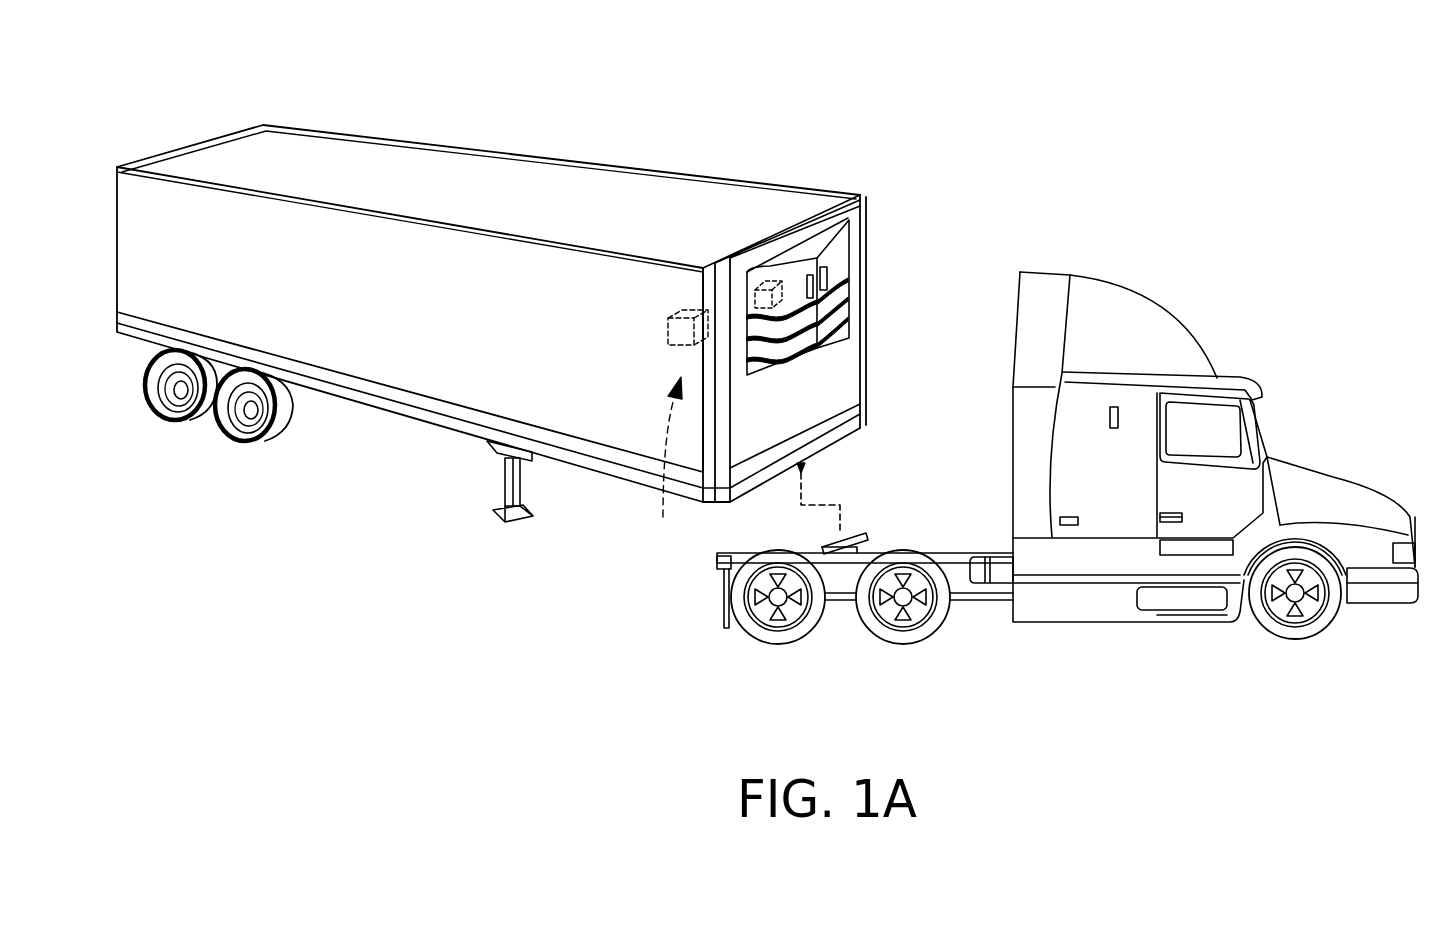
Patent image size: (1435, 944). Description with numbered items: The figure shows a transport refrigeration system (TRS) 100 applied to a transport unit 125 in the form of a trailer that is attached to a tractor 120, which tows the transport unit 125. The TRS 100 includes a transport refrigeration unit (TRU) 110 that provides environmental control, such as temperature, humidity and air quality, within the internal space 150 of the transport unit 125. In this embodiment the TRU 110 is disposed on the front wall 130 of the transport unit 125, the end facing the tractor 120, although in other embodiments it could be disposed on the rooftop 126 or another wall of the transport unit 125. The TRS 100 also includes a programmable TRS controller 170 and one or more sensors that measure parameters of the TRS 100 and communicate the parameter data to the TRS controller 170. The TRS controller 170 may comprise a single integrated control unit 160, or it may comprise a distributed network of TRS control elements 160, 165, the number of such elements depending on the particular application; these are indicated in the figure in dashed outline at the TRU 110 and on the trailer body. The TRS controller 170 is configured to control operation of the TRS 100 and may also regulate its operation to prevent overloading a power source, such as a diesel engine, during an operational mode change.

The transport refrigeration system (TRS) 100 is at (818, 132).
The transport refrigeration unit (TRU) 110 is at (845, 262).
The tractor 120 is at (1293, 457).
The transport unit (TU) 125 is at (590, 161).
The rooftop 126 is at (462, 165).
The front wall 130 is at (861, 195).
The internal space 150 is at (433, 310).
The integrated control unit / TRS control element 160 is at (780, 285).
The TRS control element 165 is at (670, 333).
The TRS controller 170 is at (658, 461).